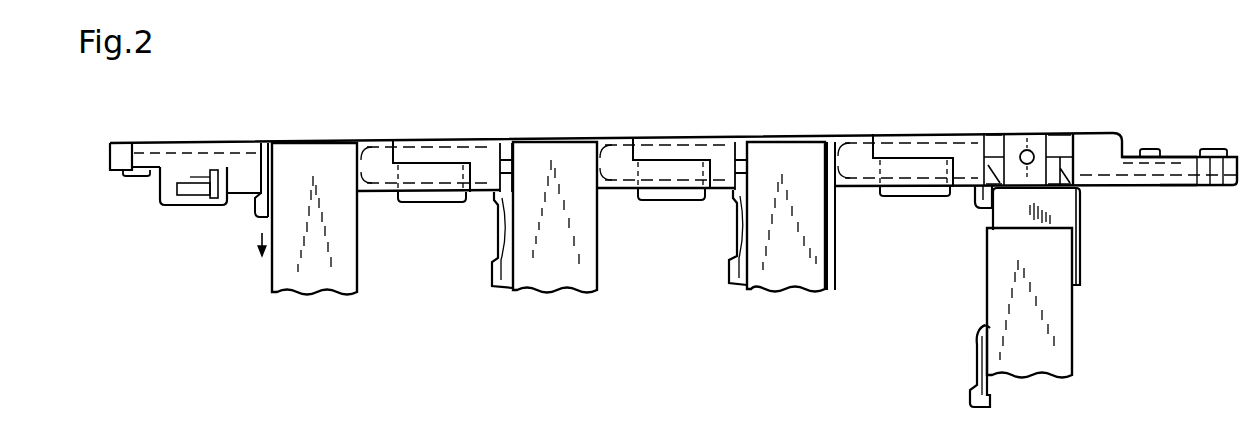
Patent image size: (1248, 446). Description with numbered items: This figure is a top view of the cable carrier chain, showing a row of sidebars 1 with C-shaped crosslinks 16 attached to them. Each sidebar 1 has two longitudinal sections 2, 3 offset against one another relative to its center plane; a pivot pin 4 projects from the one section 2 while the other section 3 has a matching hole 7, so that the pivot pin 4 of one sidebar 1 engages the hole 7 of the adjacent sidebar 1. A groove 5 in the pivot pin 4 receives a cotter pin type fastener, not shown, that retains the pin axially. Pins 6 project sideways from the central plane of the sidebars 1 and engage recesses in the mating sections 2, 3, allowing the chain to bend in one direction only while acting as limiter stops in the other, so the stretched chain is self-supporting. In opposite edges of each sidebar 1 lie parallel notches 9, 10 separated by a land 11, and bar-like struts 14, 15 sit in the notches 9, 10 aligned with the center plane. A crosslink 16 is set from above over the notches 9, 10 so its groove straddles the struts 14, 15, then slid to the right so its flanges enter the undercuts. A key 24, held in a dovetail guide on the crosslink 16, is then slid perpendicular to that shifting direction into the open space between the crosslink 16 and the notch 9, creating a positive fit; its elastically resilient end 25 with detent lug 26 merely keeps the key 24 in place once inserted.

The sidebar 1 is at (367, 157).
The longitudinal section 2 is at (157, 147).
The longitudinal section 3 is at (450, 177).
The pivot pin 4 is at (167, 186).
The groove 5 is at (200, 193).
The pin 6 is at (133, 178).
The hole 7 is at (1177, 160).
The notch 9 is at (995, 137).
The notch 10 is at (1060, 137).
The land 11 is at (1030, 137).
The strut 14 is at (1078, 193).
The strut 15 is at (975, 208).
The crosslink 16 is at (312, 272).
The key 24 is at (257, 210).
The elastically resilient end 25 is at (978, 343).
The detent lug 26 is at (985, 328).